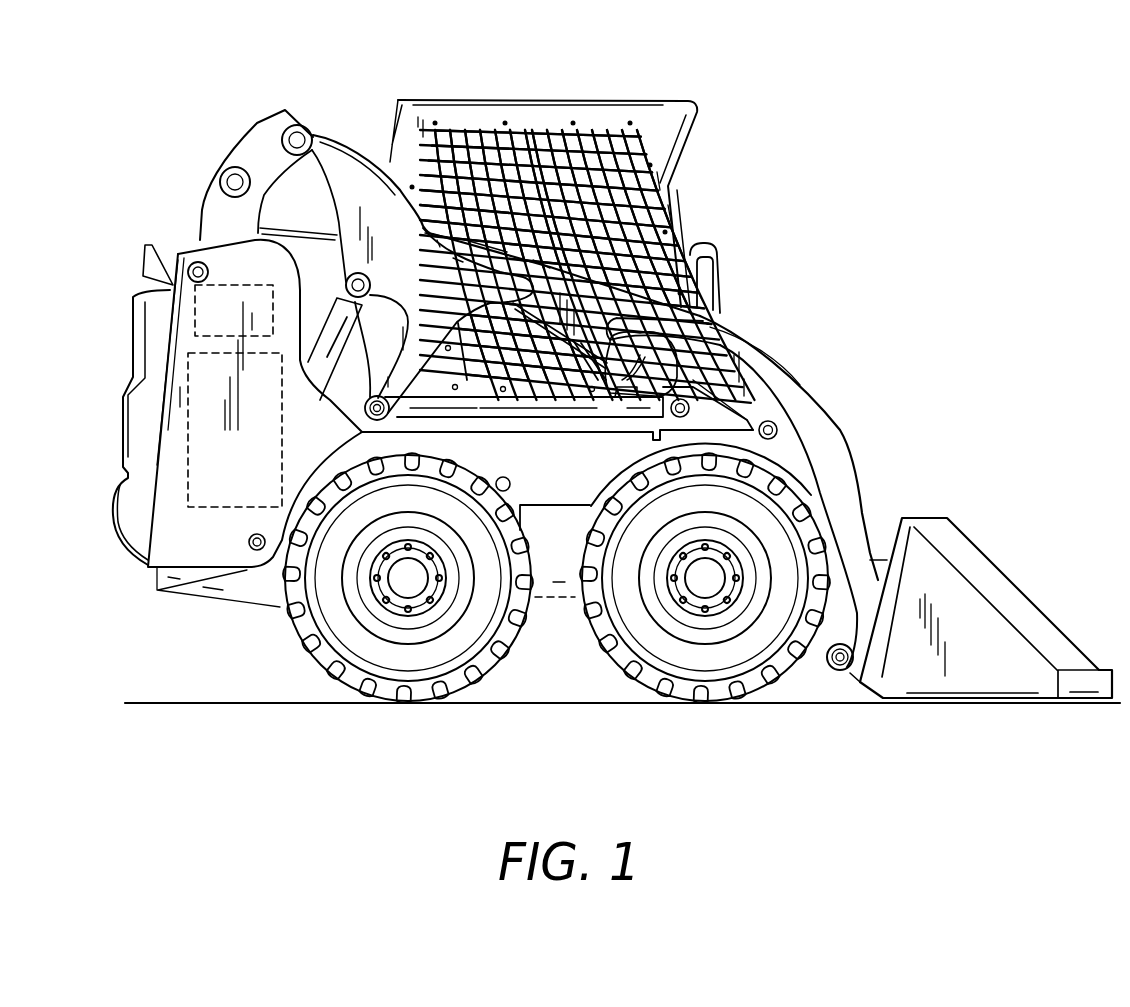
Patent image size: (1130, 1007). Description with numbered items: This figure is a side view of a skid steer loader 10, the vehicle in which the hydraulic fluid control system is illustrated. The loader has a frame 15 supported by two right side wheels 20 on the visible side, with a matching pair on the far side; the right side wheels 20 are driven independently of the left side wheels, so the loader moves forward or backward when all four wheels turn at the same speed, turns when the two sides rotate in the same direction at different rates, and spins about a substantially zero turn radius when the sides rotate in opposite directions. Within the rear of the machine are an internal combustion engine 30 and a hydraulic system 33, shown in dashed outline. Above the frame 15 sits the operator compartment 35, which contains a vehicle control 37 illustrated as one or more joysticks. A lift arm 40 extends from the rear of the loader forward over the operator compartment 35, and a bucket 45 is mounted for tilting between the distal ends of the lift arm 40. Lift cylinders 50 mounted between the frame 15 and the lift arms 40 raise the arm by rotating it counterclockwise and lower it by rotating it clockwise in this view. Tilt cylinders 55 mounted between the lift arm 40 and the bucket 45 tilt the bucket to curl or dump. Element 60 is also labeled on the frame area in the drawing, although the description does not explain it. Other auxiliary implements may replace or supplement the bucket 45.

The skid steer loader 10 is at (805, 170).
The frame 15 is at (553, 600).
The right side wheels 20 is at (380, 693).
The internal combustion engine 30 is at (217, 490).
The hydraulic system 33 is at (230, 297).
The operator compartment 35 is at (585, 115).
The vehicle control 37 is at (657, 357).
The lift arm 40 is at (600, 306).
The bucket 45 is at (973, 573).
The lift cylinders 50 is at (327, 362).
The tilt cylinders 55 is at (843, 442).
The frame rail 60 is at (507, 405).